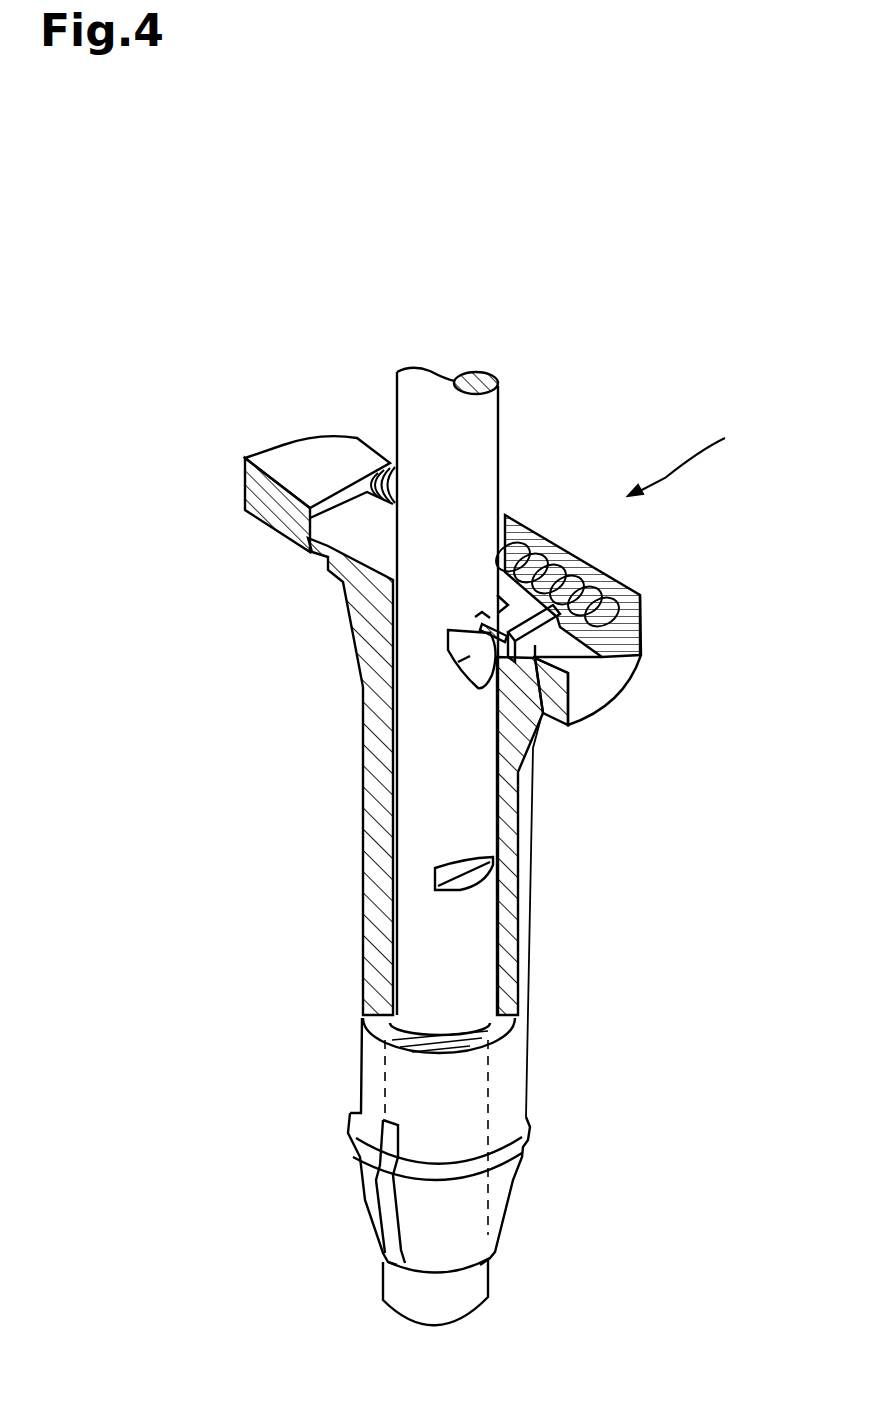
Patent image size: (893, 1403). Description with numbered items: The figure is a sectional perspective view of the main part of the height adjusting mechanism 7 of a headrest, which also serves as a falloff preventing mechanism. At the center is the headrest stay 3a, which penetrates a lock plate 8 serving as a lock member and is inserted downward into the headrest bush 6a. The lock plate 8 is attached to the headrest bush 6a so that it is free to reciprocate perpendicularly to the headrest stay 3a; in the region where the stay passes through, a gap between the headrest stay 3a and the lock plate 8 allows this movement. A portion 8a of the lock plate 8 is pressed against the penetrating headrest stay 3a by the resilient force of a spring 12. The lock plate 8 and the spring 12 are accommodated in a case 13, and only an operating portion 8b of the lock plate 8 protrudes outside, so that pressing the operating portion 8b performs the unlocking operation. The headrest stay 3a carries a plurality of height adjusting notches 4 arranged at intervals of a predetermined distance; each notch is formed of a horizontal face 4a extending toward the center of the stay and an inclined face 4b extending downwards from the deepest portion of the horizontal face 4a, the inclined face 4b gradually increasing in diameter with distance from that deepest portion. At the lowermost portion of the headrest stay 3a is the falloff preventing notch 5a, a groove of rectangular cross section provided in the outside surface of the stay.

The headrest stay 3a is at (472, 437).
The height adjusting notches 4 is at (374, 676).
The horizontal face 4a is at (463, 635).
The inclined face 4b is at (477, 660).
The falloff preventing notch 5a is at (470, 880).
The headrest bush 6a is at (363, 853).
The height adjusting mechanism 7 is at (698, 458).
The lock plate 8 is at (338, 557).
The portion of the lock plate 8a is at (570, 567).
The operating portion 8b is at (285, 448).
The spring 12 is at (518, 577).
The case 13 is at (610, 667).